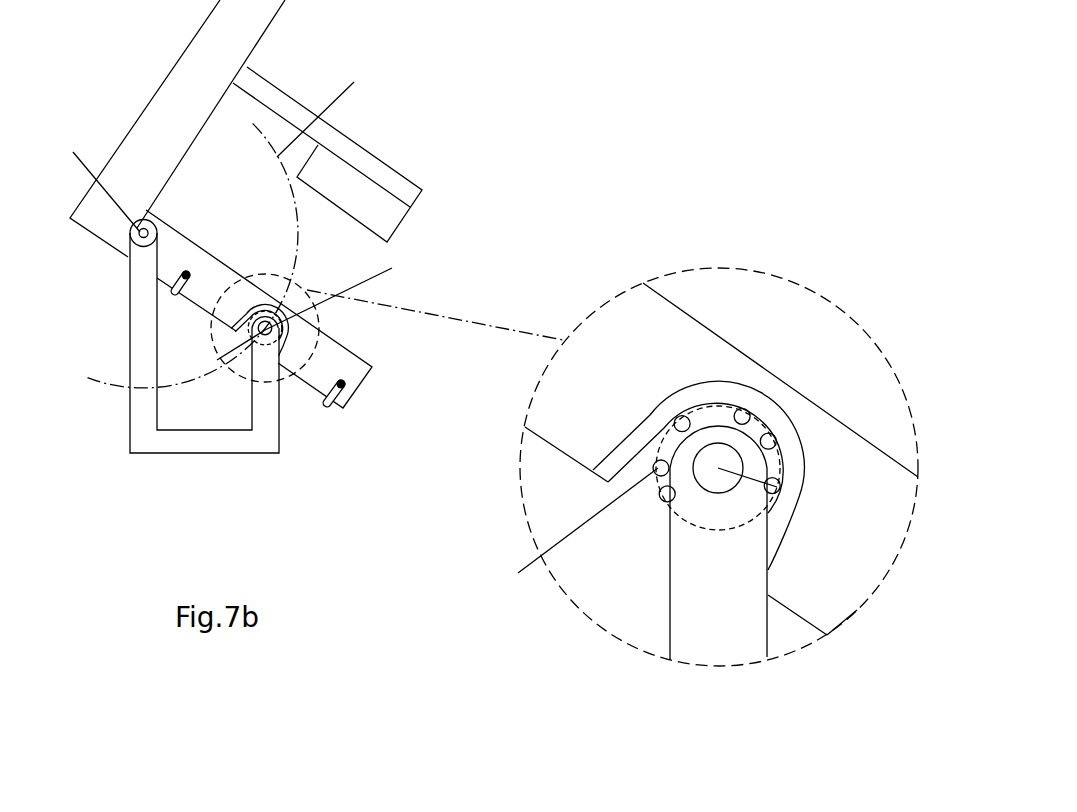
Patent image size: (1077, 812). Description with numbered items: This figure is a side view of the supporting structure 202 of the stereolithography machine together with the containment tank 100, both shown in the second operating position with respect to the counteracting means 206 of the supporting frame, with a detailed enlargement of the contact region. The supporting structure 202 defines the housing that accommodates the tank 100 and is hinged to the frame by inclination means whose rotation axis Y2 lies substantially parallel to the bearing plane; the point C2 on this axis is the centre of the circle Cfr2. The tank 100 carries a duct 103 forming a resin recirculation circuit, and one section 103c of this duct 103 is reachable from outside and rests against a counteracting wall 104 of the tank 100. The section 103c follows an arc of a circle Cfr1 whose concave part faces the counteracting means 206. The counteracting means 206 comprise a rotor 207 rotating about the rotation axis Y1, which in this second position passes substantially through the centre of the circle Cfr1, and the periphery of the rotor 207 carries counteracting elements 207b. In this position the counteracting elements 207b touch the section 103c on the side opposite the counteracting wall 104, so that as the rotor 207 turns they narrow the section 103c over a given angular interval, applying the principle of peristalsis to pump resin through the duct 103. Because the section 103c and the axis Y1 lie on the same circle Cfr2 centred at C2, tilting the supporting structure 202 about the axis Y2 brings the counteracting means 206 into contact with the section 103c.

The tank 100 is at (372, 345).
The duct 103 is at (798, 565).
The section of the duct 103c is at (783, 460).
The counteracting wall 104 is at (772, 395).
The supporting structure 202 is at (239, 239).
The counteracting means 206 is at (270, 360).
The rotor 207 is at (644, 512).
The counteracting element 207b is at (740, 417).
The rotation axis Y1 is at (319, 306).
The rotation axis Y2 is at (101, 182).
The centre of circle Crf2 C2 is at (150, 229).
The circle Cfr1 is at (564, 532).
The circle Cfr2 is at (338, 109).